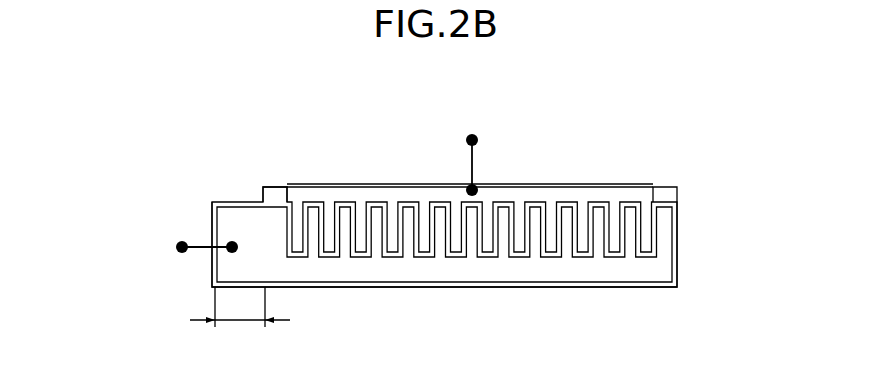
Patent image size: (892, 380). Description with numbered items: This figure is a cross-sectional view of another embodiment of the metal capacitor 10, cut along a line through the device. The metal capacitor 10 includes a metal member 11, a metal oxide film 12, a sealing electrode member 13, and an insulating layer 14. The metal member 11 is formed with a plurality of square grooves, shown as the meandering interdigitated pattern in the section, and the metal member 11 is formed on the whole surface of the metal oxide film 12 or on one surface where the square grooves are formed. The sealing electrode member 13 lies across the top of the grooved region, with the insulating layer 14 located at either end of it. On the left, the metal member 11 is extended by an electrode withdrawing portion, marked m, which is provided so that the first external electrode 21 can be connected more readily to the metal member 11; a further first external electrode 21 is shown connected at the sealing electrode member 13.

The metal capacitor 10 is at (596, 160).
The metal member 11 is at (480, 273).
The metal oxide film 12 is at (415, 288).
The sealing electrode member 13 is at (393, 198).
The insulating layer 14 is at (277, 193).
The first external electrode 21 is at (478, 139).